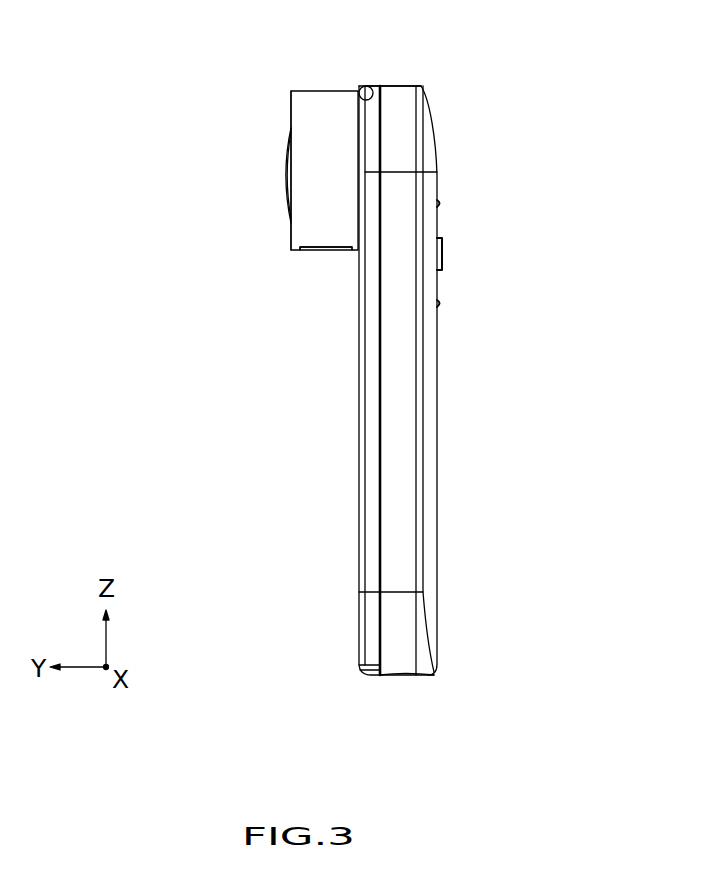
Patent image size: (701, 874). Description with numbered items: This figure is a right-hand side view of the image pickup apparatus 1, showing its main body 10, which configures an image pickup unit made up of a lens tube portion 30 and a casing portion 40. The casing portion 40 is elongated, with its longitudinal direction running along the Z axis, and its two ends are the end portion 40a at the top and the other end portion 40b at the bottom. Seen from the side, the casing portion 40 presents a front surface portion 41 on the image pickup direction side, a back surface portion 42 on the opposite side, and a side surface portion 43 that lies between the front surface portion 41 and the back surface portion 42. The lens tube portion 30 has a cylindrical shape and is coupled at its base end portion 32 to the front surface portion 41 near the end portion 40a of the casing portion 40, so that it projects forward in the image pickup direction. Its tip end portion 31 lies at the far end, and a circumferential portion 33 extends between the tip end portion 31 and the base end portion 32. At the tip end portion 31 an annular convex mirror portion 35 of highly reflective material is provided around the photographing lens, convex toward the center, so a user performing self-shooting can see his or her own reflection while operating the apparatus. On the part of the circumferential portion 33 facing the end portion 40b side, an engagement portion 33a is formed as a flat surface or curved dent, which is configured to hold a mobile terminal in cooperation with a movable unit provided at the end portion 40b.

The image pickup apparatus 1 is at (512, 142).
The main body 10 is at (189, 205).
The lens tube portion 30 is at (275, 170).
The tip end portion 31 is at (291, 100).
The base end portion 32 is at (370, 85).
The circumferential portion 33 is at (315, 100).
The engagement portion 33a is at (329, 251).
The convex mirror portion 35 is at (285, 165).
The casing portion 40 is at (361, 385).
The end portion 40a is at (397, 90).
The end portion 40b is at (400, 676).
The front surface portion 41 is at (358, 495).
The back surface portion 42 is at (438, 497).
The side surface portion 43 is at (393, 405).